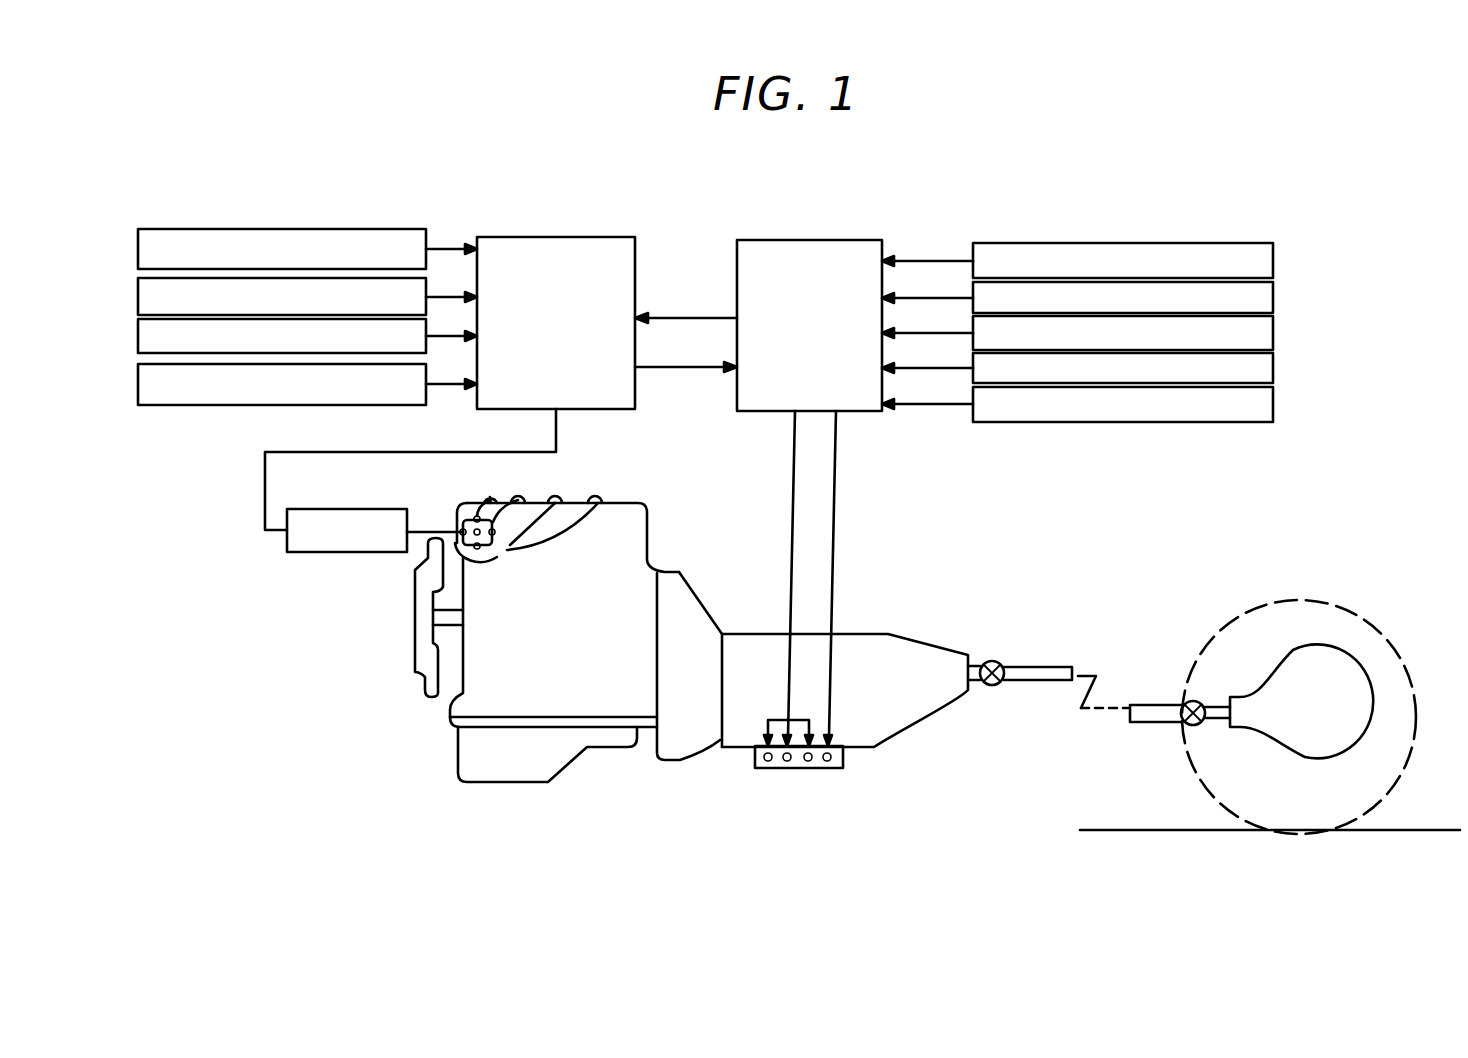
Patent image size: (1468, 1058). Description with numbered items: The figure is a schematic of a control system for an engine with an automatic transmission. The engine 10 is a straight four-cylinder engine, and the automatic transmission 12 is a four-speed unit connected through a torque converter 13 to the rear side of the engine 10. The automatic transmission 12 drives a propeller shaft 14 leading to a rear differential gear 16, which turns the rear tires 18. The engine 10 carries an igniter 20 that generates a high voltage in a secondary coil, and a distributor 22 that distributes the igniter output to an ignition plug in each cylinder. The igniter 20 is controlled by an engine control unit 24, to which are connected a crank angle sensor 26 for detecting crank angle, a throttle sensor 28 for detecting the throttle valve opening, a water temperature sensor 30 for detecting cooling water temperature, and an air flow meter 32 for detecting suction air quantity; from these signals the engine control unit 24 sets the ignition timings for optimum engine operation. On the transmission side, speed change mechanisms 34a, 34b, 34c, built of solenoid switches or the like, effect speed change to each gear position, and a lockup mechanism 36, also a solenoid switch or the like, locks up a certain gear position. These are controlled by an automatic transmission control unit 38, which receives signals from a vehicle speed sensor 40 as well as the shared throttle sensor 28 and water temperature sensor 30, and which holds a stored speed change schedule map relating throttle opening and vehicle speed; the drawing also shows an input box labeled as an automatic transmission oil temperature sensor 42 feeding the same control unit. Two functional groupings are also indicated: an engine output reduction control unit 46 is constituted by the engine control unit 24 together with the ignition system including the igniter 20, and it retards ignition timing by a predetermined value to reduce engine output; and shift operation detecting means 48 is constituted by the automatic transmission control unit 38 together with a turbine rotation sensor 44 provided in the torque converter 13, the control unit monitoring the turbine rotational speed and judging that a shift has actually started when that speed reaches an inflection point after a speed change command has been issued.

The engine 10 is at (455, 706).
The automatic transmission 12 is at (919, 639).
The torque converter 13 is at (703, 613).
The propeller shaft 14 is at (1036, 688).
The rear differential gear 16 is at (1310, 757).
The rear tires 18 is at (1403, 775).
The igniter 20 is at (357, 552).
The distributor 22 is at (475, 518).
The engine control unit 24 is at (572, 237).
The crank angle sensor 26 is at (138, 296).
The throttle sensor 28 is at (138, 336).
The water temperature sensor 30 is at (138, 384).
The air flow meter 32 is at (138, 248).
The speed change mechanism 34a is at (762, 769).
The speed change mechanism 34b is at (785, 769).
The speed change mechanism 34c is at (806, 769).
The lockup mechanism 36 is at (830, 769).
The automatic transmission control unit 38 is at (869, 240).
The vehicle speed sensor 40 is at (1273, 334).
The A/T oil temperature sensor 42 is at (1273, 405).
The turbine rotation sensor 44 is at (1273, 262).
The engine output reduction control unit 46 is at (637, 268).
The shift operation detecting means 48 is at (813, 240).